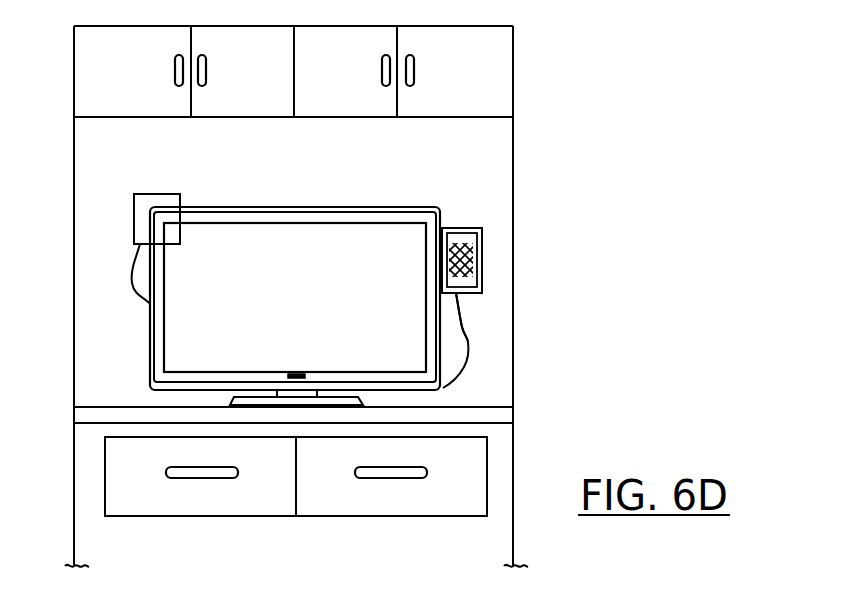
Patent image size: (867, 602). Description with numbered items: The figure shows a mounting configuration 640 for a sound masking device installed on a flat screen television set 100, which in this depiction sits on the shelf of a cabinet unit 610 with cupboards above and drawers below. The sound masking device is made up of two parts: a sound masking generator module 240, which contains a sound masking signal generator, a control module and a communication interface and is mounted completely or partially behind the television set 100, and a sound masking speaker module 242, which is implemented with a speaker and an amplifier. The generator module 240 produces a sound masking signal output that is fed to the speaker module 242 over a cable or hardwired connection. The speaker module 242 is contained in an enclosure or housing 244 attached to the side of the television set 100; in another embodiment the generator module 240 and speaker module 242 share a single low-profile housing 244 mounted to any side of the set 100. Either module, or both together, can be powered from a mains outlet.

The television set 100 is at (303, 201).
The sound masking generator module 240 is at (157, 193).
The sound masking speaker module 242 is at (459, 228).
The enclosure or housing 244 is at (518, 329).
The entertainment center / cabinet 610 is at (514, 262).
The mounting configuration 640 is at (464, 153).